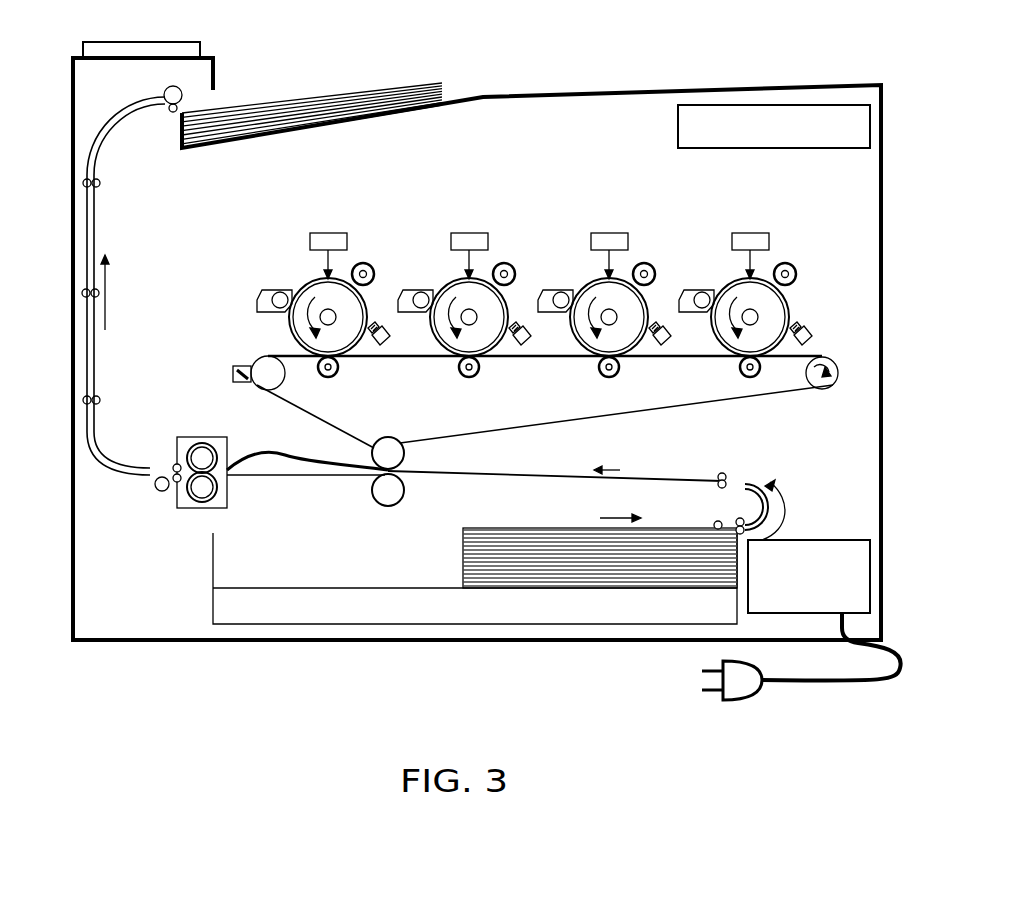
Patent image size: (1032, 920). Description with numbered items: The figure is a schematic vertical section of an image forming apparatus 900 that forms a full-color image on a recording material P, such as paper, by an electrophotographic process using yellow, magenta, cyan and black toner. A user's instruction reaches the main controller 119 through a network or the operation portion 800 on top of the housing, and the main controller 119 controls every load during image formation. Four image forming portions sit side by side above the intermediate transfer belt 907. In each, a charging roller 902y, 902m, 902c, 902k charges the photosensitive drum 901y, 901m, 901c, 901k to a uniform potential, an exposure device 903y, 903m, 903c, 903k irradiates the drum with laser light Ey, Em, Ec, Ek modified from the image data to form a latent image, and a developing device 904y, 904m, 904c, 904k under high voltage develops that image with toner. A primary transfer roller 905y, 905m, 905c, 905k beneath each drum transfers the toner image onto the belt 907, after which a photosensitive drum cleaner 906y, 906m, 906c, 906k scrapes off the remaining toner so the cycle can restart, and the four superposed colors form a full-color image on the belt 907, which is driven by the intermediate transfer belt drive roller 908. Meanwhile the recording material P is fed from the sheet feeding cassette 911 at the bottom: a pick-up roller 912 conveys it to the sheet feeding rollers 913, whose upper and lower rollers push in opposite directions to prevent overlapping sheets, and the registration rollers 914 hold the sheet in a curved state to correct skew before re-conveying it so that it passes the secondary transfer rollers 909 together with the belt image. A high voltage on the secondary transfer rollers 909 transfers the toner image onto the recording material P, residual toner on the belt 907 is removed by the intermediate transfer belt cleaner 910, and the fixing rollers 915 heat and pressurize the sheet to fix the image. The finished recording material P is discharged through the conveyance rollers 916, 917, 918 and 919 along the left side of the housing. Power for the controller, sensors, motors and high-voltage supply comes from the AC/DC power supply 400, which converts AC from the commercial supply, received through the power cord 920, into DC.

The operation portion 800 is at (202, 46).
The image forming apparatus 900 is at (797, 83).
The main controller 119 is at (678, 128).
The conveyance roller 919 is at (165, 92).
The conveyance roller 918 is at (104, 183).
The conveyance roller 917 is at (80, 290).
The conveyance roller 916 is at (100, 400).
The fixing rollers 915 is at (180, 437).
The intermediate transfer belt cleaner 910 is at (240, 367).
The recording material P is at (262, 455).
The secondary transfer rollers 909 is at (372, 490).
The intermediate transfer belt 907 is at (688, 408).
The intermediate transfer belt drive roller 908 is at (826, 390).
The sheet feeding cassette 911 is at (213, 580).
The pick-up roller 912 is at (716, 522).
The registration rollers 914 is at (718, 477).
The sheet feeding rollers 913 is at (762, 538).
The AC/DC power supply 400 is at (872, 565).
The power cord 920 is at (840, 683).
The exposure device 903y is at (328, 232).
The charging roller 902y is at (366, 262).
The laser light Ey is at (326, 263).
The developing device 904y is at (279, 290).
The photosensitive drum cleaner 906y is at (386, 334).
The photosensitive drum 901y is at (352, 350).
The primary transfer roller 905y is at (328, 377).
The exposure device 903m is at (469, 232).
The charging roller 902m is at (506, 262).
The laser light Em is at (460, 264).
The developing device 904m is at (421, 290).
The photosensitive drum cleaner 906m is at (527, 334).
The photosensitive drum 901m is at (493, 350).
The primary transfer roller 905m is at (469, 377).
The exposure device 903c is at (609, 232).
The charging roller 902c is at (646, 262).
The laser light Ec is at (600, 264).
The developing device 904c is at (561, 290).
The photosensitive drum cleaner 906c is at (667, 334).
The photosensitive drum 901c is at (633, 350).
The primary transfer roller 905c is at (609, 377).
The exposure device 903k is at (750, 232).
The charging roller 902k is at (787, 262).
The laser light Ek is at (741, 264).
The developing device 904k is at (702, 290).
The photosensitive drum cleaner 906k is at (808, 334).
The photosensitive drum 901k is at (784, 304).
The primary transfer roller 905k is at (752, 378).